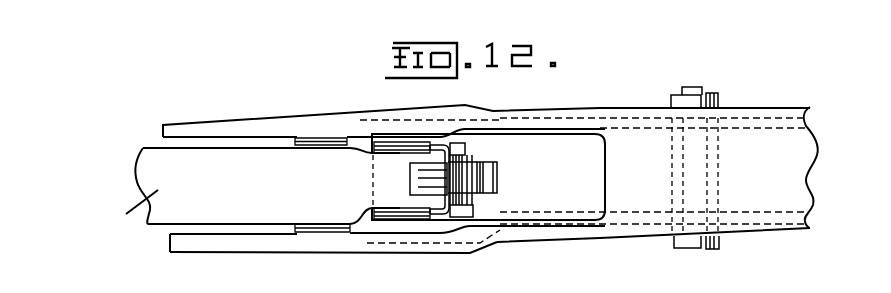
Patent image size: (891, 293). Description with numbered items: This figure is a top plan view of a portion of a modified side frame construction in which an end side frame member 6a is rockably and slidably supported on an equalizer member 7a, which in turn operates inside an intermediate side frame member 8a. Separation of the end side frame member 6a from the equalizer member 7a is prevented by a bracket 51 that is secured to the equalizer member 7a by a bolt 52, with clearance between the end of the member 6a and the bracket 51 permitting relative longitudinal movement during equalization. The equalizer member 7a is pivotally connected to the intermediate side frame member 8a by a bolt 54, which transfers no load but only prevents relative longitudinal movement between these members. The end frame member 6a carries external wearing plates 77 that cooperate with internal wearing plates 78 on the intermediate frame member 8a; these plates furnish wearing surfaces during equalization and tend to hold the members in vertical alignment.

The end side frame member 6a is at (250, 187).
The equalizer member 7a is at (573, 150).
The intermediate side frame member 8a is at (775, 142).
The bracket 51 is at (425, 218).
The bolt 52 is at (474, 216).
The bolt 54 is at (693, 86).
The external wearing plates 77 is at (325, 146).
The internal wearing plates 78 is at (328, 136).